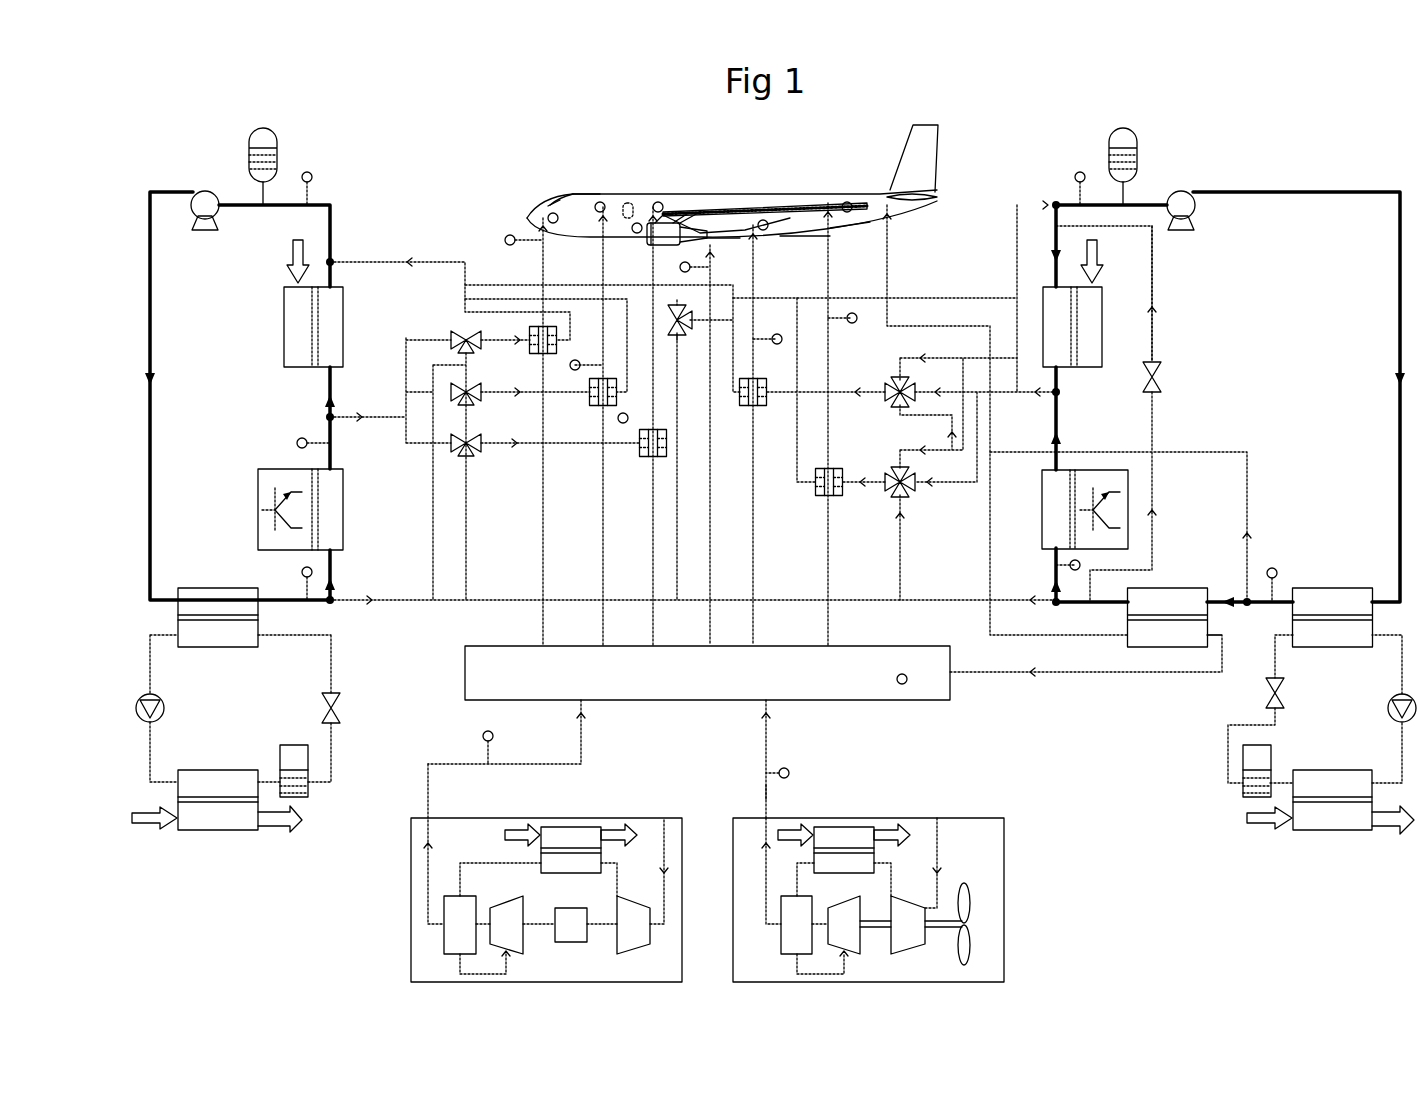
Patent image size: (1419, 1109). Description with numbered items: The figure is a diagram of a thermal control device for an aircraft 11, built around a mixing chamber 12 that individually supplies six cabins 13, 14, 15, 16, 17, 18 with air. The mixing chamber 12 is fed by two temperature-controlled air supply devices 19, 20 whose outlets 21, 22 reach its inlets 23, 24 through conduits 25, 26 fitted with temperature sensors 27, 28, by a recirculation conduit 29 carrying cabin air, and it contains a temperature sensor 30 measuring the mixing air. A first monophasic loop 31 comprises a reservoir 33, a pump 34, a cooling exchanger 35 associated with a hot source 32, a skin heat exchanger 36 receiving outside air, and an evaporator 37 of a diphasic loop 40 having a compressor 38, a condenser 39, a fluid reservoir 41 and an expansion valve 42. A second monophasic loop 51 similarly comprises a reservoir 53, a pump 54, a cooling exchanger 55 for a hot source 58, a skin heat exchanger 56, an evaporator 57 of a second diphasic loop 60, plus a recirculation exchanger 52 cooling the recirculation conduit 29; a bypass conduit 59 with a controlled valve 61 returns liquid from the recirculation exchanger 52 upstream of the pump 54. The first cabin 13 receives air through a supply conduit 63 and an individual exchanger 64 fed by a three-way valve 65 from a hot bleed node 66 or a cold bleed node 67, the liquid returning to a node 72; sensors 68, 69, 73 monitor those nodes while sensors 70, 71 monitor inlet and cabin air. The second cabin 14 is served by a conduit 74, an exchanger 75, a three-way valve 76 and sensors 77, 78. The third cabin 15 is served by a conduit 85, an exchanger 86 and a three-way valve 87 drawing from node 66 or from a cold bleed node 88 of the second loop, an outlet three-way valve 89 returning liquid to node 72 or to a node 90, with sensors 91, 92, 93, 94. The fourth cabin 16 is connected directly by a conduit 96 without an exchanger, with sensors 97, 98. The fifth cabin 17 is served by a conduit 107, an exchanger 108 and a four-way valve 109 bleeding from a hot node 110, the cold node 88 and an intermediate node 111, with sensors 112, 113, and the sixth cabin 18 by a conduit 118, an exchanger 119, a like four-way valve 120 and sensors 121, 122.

The aircraft 11 is at (660, 168).
The mixing chamber 12 is at (707, 673).
The first cabin 13 is at (560, 203).
The second cabin 14 is at (562, 203).
The third cabin 15 is at (685, 262).
The fourth cabin 16 is at (730, 234).
The fifth cabin 17 is at (788, 218).
The sixth cabin 18 is at (838, 205).
The air supply device 19 is at (1004, 973).
The air supply device 20 is at (411, 973).
The outlet 21 is at (768, 817).
The outlet 22 is at (427, 817).
The inlet 23 is at (768, 712).
The inlet 24 is at (583, 712).
The conduit 25 is at (764, 792).
The conduit 26 is at (545, 767).
The temperature sensor 27 is at (789, 771).
The temperature sensor 28 is at (483, 735).
The recirculation conduit 29 is at (997, 676).
The temperature sensor 30 is at (904, 685).
The first monophasic heat transfer liquid thermal regulation loop 31 is at (240, 396).
The hot source 32 is at (262, 527).
The heat transfer liquid reservoir 33 is at (263, 133).
The pump 34 is at (208, 196).
The cooling exchanger 35 is at (335, 525).
The skin heat exchanger 36 is at (335, 327).
The heat exchanger 37 is at (210, 597).
The compressor 38 is at (140, 702).
The heat exchanger 39 is at (205, 775).
The diphasic heat transfer fluid thermal regulation loop 40 is at (240, 708).
The fluid reservoir 41 is at (302, 797).
The expansion valve 42 is at (340, 700).
The second monophasic heat transfer liquid thermal regulation loop 51 is at (1228, 399).
The recirculation exchanger 52 is at (1152, 650).
The heat transfer liquid reservoir 53 is at (1123, 133).
The pump 54 is at (1176, 196).
The cooling exchanger 55 is at (1050, 524).
The skin heat exchanger 56 is at (1032, 305).
The heat exchanger 57 is at (1335, 597).
The hot source 58 is at (1115, 505).
The bypass conduit 59 is at (1155, 322).
The diphasic heat transfer fluid thermal regulation loop 60 is at (1322, 734).
The valve 61 is at (1165, 380).
The air supply conduit 63 is at (541, 525).
The individual exchanger 64 is at (540, 326).
The three-way valve 65 is at (455, 333).
The first hot bleed node 66 is at (326, 416).
The second cold bleed node 67 is at (335, 598).
The temperature sensor 68 is at (297, 443).
The temperature sensor 69 is at (302, 571).
The temperature sensor 70 is at (505, 239).
The temperature sensor 71 is at (548, 218).
The node 72 is at (333, 260).
The temperature sensor 73 is at (307, 172).
The air supply conduit 74 is at (601, 535).
The individual exchanger 75 is at (598, 402).
The three-way valve 76 is at (476, 403).
The temperature sensor 77 is at (576, 359).
The temperature sensor 78 is at (600, 203).
The air supply conduit 85 is at (651, 535).
The individual exchanger 86 is at (660, 456).
The three-way valve 87 is at (473, 455).
The second cold bleed node 88 is at (1058, 606).
The outlet three-way valve 89 is at (677, 304).
The node 90 is at (1052, 203).
The temperature sensor 91 is at (1075, 571).
The temperature sensor 92 is at (1080, 172).
The temperature sensor 93 is at (623, 424).
The temperature sensor 94 is at (656, 203).
The air supply conduit 96 is at (708, 525).
The temperature sensor 97 is at (700, 224).
The temperature sensor 98 is at (634, 233).
The air supply conduit 107 is at (755, 535).
The individual exchanger 108 is at (750, 405).
The four-way valve 109 is at (892, 384).
The first hot bleed node 110 is at (1050, 388).
The third intermediate temperature bleed node 111 is at (1250, 598).
The temperature sensor 112 is at (777, 334).
The temperature sensor 113 is at (767, 221).
The air supply conduit 118 is at (832, 628).
The individual exchanger 119 is at (830, 470).
The four-way valve 120 is at (893, 497).
The temperature sensor 121 is at (852, 313).
The temperature sensor 122 is at (853, 206).